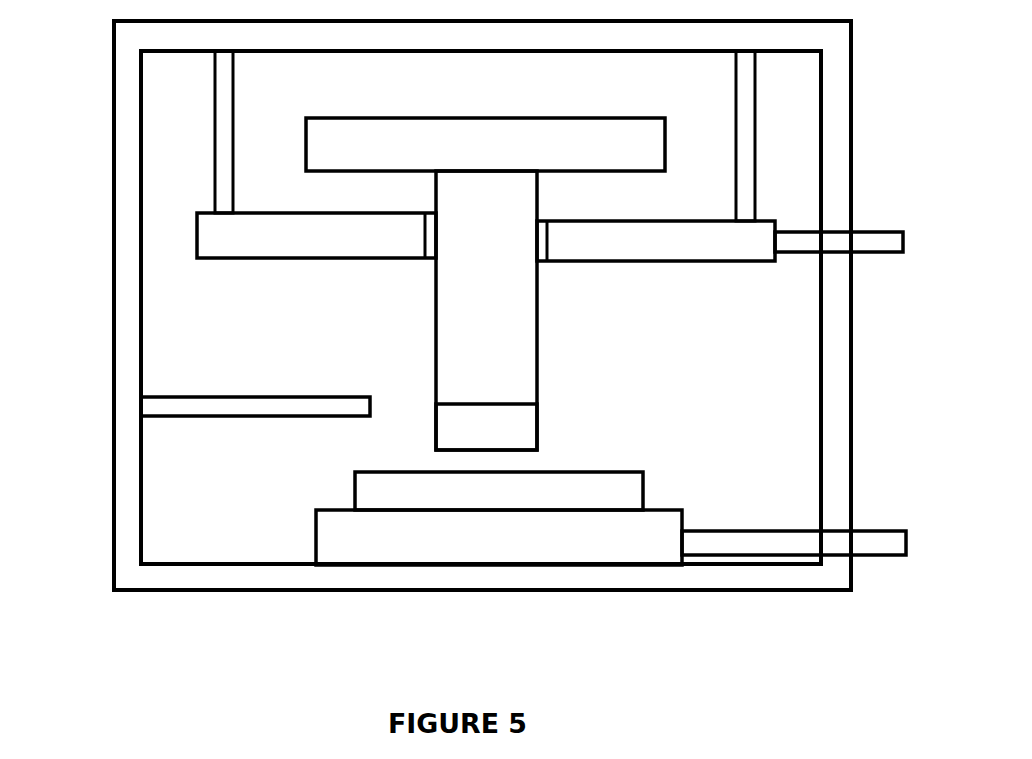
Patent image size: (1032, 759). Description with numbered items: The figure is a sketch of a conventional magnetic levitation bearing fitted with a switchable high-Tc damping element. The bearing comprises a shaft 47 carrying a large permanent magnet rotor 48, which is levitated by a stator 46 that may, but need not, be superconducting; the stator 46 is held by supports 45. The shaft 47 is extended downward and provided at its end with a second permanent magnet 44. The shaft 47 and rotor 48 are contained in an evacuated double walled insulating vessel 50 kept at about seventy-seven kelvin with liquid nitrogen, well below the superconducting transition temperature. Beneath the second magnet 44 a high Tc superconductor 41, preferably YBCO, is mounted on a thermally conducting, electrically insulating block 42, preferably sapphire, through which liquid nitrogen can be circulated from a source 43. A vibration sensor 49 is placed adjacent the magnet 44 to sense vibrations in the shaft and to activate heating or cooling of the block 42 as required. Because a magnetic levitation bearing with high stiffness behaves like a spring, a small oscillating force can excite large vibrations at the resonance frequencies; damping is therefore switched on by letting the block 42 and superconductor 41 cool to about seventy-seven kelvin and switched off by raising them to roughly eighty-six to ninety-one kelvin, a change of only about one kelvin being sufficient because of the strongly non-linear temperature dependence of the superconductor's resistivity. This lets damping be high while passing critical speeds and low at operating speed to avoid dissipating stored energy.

The evacuated double walled insulating vessel 50 is at (112, 341).
The supports 45 is at (233, 67).
The permanent magnet rotor 48 is at (718, 188).
The shaft 47 is at (537, 293).
The second permanent magnet 44 is at (537, 436).
The stator 46 is at (313, 261).
The source 43 is at (800, 253).
The vibration sensor 49 is at (234, 397).
The high Tc superconductor 41 is at (382, 492).
The thermally conducting, electrically insulating block 42 is at (342, 547).